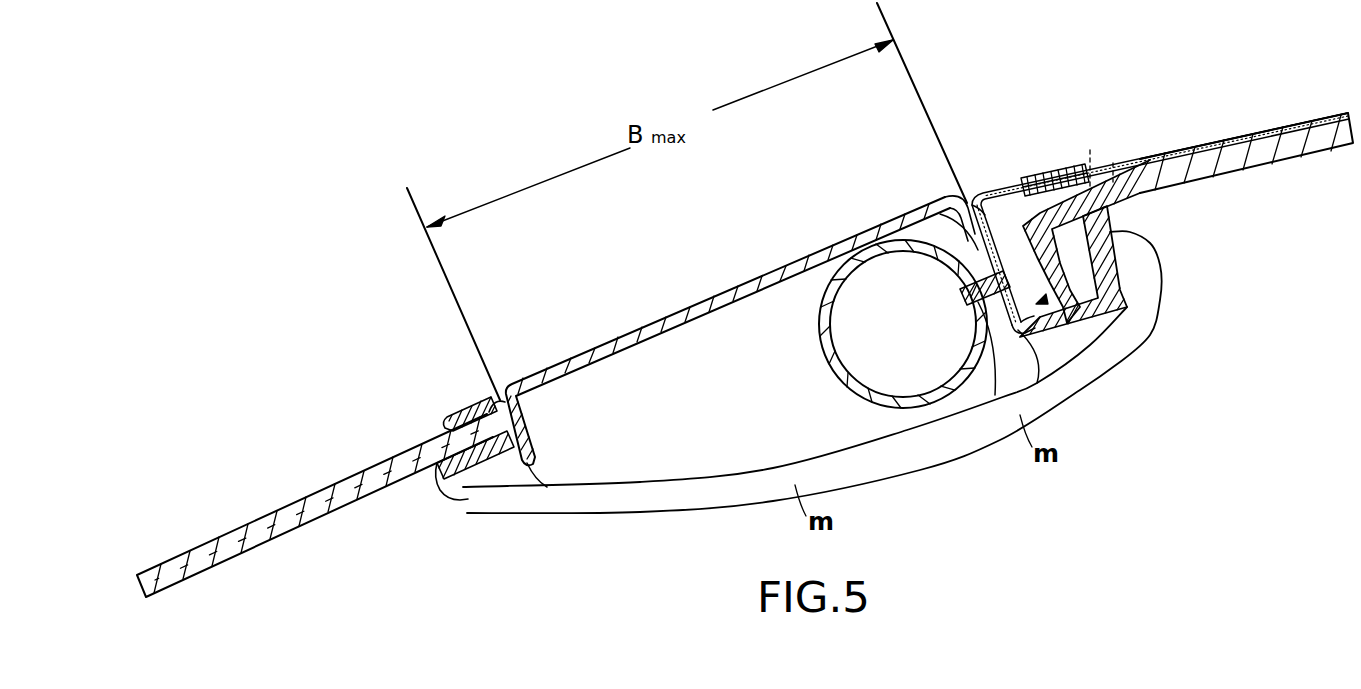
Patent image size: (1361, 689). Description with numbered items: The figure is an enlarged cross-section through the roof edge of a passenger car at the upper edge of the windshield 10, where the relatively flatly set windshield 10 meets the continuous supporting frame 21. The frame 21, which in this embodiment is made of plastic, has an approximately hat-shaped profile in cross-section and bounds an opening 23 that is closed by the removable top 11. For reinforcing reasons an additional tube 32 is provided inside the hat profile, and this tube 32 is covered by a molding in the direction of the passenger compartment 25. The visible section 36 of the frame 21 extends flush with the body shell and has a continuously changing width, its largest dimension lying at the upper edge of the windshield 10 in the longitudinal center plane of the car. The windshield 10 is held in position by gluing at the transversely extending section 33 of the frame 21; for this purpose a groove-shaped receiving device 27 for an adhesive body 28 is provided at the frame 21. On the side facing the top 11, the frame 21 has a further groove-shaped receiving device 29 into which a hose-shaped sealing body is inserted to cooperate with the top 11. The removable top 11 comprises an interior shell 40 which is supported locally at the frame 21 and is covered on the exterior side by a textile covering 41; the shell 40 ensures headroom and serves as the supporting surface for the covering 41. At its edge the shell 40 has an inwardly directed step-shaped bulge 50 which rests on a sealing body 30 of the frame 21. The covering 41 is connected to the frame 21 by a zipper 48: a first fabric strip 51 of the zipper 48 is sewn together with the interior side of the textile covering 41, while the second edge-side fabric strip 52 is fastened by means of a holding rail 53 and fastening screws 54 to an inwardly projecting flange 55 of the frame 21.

The windshield 10 is at (277, 530).
The removable top 11 is at (1302, 114).
The supporting frame 21 is at (565, 354).
The opening 23 is at (1140, 132).
The passenger compartment 25 is at (628, 565).
The groove-shaped receiving device 27 is at (473, 418).
The adhesive body 28 is at (463, 472).
The groove-shaped receiving device 29 is at (1067, 310).
The sealing body 30 is at (1122, 302).
The tube 32 is at (853, 390).
The transversely extending section 33 is at (733, 288).
The visible section 36 is at (633, 325).
The interior shell 40 is at (1260, 128).
The textile covering 41 is at (1185, 137).
The zipper 48 is at (1044, 167).
The step-shaped bulge 50 is at (1120, 200).
The first fabric strip 51 is at (1107, 167).
The second fabric strip 52 is at (985, 186).
The holding rail 53 is at (992, 200).
The fastening screws 54 is at (1007, 305).
The inwardly projecting flange 55 is at (977, 250).